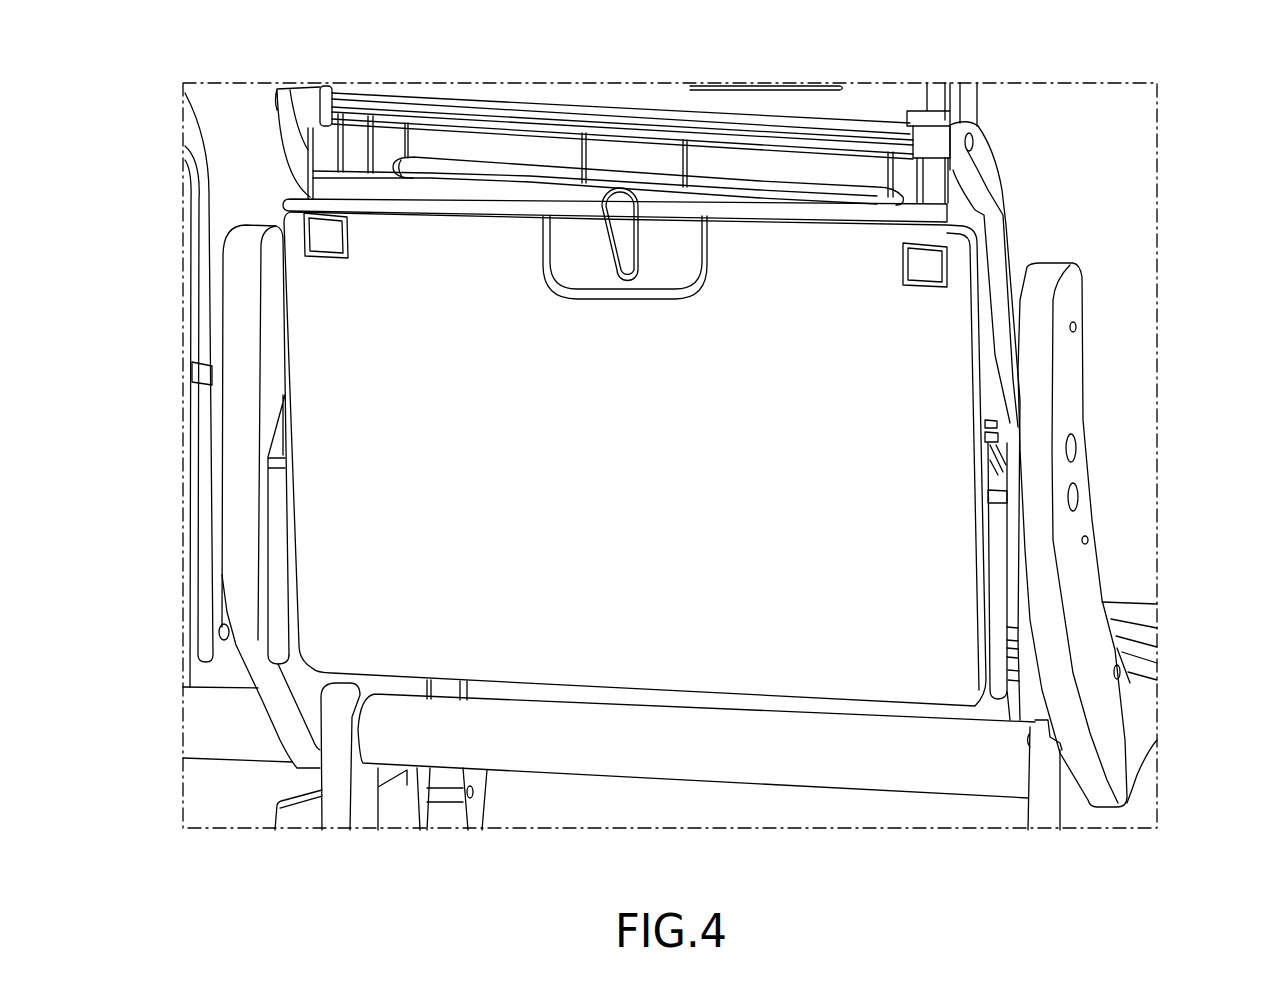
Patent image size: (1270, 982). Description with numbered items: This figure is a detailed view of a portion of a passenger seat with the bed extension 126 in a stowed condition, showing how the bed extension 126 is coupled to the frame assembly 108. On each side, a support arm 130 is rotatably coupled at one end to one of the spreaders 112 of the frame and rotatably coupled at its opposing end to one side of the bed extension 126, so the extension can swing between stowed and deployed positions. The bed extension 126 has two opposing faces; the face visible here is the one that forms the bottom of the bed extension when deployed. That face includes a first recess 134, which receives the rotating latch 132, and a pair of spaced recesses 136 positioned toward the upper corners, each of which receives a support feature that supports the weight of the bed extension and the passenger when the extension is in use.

The frame assembly 108 is at (1142, 812).
The spreader 112 is at (236, 386).
The bed extension 126 is at (306, 318).
The support arm 130 is at (278, 513).
The rotating latch 132 is at (622, 207).
The first recess 134 is at (588, 240).
The spaced recess 136 is at (325, 233).